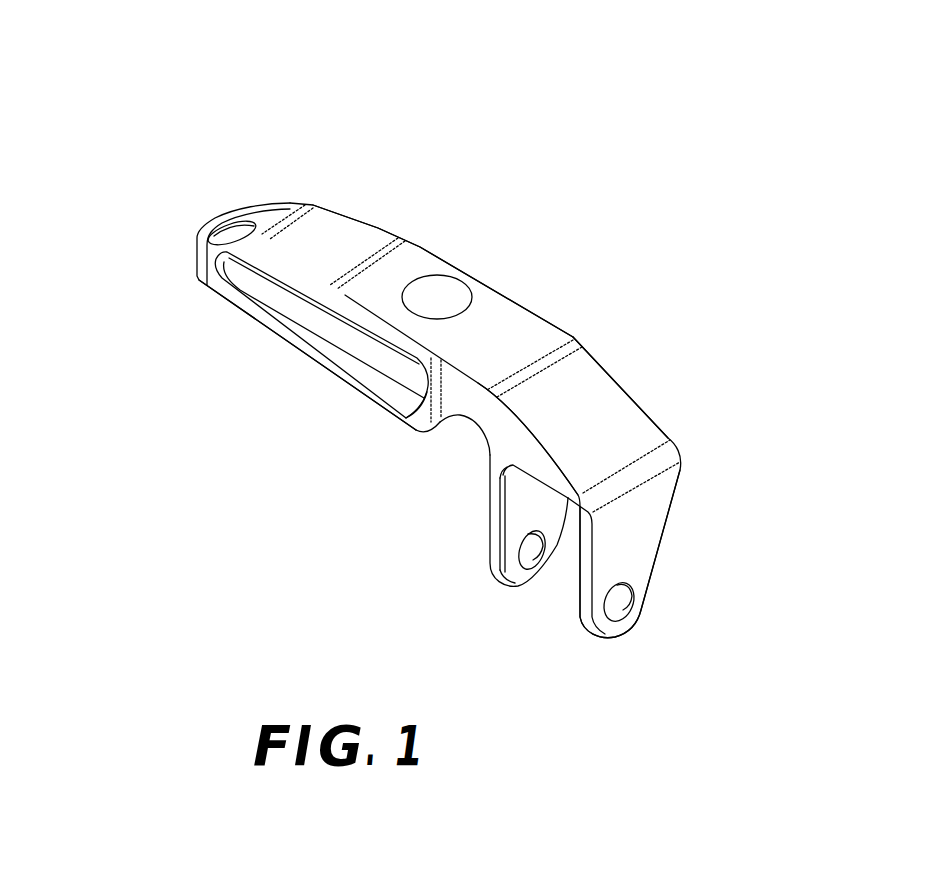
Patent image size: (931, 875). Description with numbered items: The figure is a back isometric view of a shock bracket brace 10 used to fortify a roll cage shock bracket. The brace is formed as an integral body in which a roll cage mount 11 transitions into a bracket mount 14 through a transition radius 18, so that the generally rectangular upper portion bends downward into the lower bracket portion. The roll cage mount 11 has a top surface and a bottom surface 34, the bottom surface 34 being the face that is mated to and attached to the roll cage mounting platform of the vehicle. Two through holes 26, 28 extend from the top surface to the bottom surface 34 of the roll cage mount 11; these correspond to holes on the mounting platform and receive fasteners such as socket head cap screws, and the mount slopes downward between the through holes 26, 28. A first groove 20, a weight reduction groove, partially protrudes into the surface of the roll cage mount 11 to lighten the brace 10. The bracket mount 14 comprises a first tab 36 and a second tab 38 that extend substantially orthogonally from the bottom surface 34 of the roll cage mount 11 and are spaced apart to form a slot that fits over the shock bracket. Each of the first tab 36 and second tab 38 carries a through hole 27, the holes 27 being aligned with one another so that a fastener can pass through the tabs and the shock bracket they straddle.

The shock bracket brace 10 is at (378, 190).
The roll cage mount 11 is at (377, 232).
The bracket mount 14 is at (583, 420).
The transition radius 18 is at (478, 427).
The first groove 20 is at (313, 315).
The through hole 26 is at (210, 236).
The through hole 27 is at (617, 603).
The through hole 28 is at (440, 298).
The bottom surface 34 is at (370, 400).
The first tab 36 is at (512, 517).
The second tab 38 is at (630, 530).